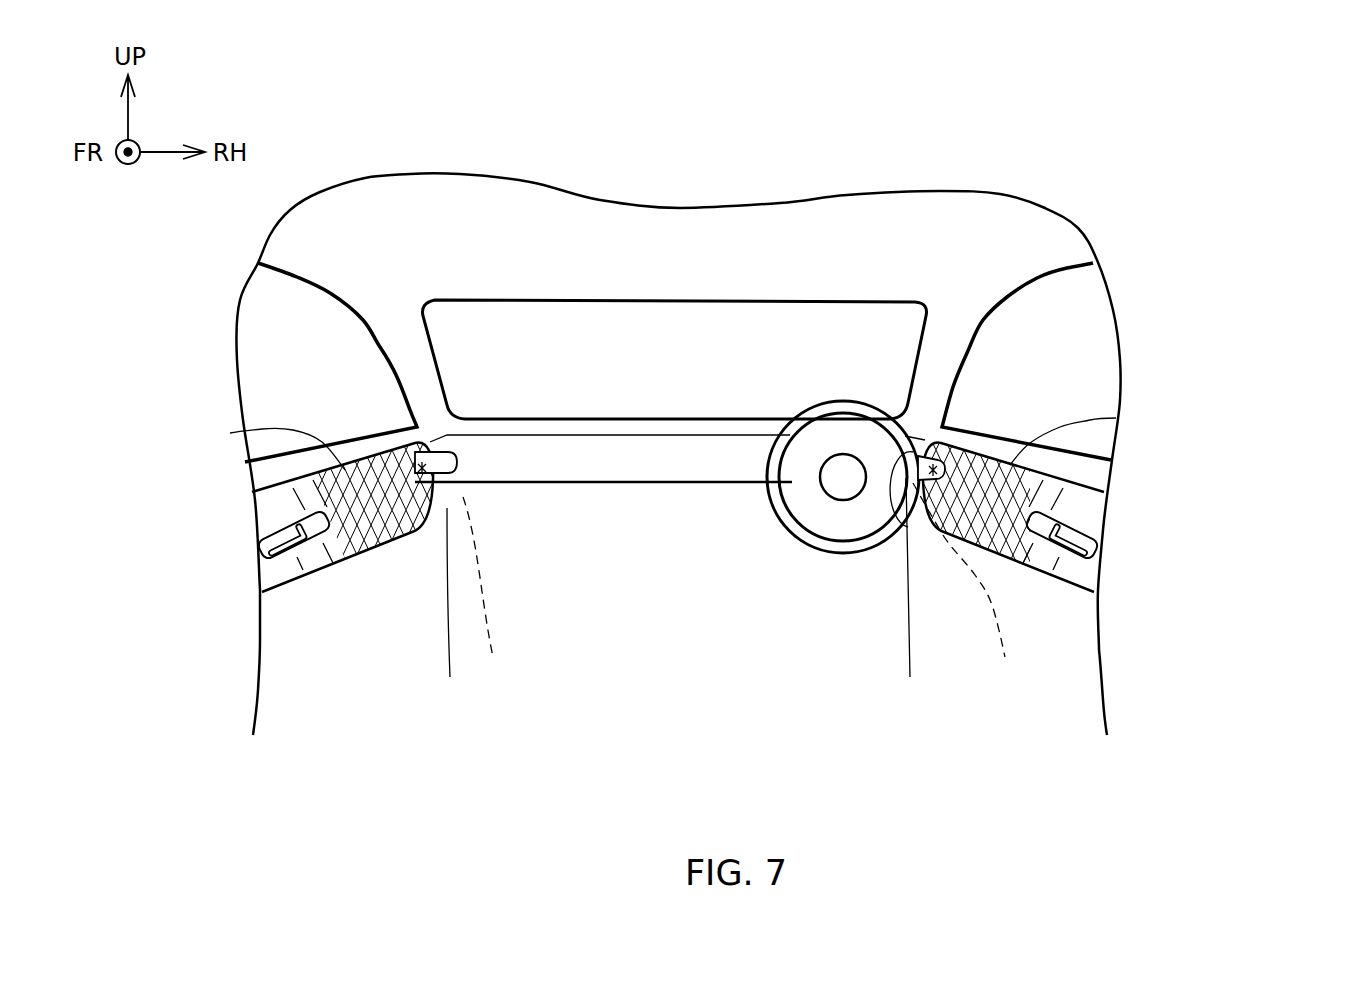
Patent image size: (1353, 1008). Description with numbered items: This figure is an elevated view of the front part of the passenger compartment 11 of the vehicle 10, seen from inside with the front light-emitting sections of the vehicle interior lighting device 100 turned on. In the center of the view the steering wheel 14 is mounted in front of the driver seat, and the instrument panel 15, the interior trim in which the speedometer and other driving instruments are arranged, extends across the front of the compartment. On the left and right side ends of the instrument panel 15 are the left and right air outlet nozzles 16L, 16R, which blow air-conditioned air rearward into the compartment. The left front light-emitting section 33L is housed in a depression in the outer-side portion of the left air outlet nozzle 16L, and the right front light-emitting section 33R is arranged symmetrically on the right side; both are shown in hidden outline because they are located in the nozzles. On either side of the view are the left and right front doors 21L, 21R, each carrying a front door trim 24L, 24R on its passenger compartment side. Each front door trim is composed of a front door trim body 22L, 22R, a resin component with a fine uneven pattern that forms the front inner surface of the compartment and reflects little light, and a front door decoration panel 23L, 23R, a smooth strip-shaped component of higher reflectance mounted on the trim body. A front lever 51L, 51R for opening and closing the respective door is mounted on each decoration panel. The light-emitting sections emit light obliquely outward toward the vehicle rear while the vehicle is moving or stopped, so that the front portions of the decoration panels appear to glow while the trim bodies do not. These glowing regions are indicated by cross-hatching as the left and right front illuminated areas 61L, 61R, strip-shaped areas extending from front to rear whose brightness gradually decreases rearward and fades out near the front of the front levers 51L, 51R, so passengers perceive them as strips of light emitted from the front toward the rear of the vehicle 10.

The vehicle interior lighting device 100 is at (380, 158).
The vehicle 10 is at (1078, 228).
The passenger compartment 11 is at (678, 764).
The steering wheel 14 is at (853, 555).
The instrument panel 15 is at (660, 483).
The left air outlet nozzle 16L is at (460, 480).
The right air outlet nozzle 16R is at (912, 500).
The left front door 21L is at (285, 365).
The right front door 21R is at (1092, 347).
The left front door trim body 22L is at (321, 636).
The right front door trim body 22R is at (1066, 616).
The left front door decoration panel 23L is at (286, 496).
The right front door decoration panel 23R is at (1085, 505).
The left front door trim 24L is at (298, 682).
The right front door trim 24R is at (1072, 678).
The left front light-emitting section 33L is at (497, 594).
The right front light-emitting section 33R is at (960, 567).
The front lever 51L is at (262, 582).
The front lever 51R is at (1085, 573).
The left front illuminated area 61L is at (355, 487).
The right front illuminated area 61R is at (1003, 483).